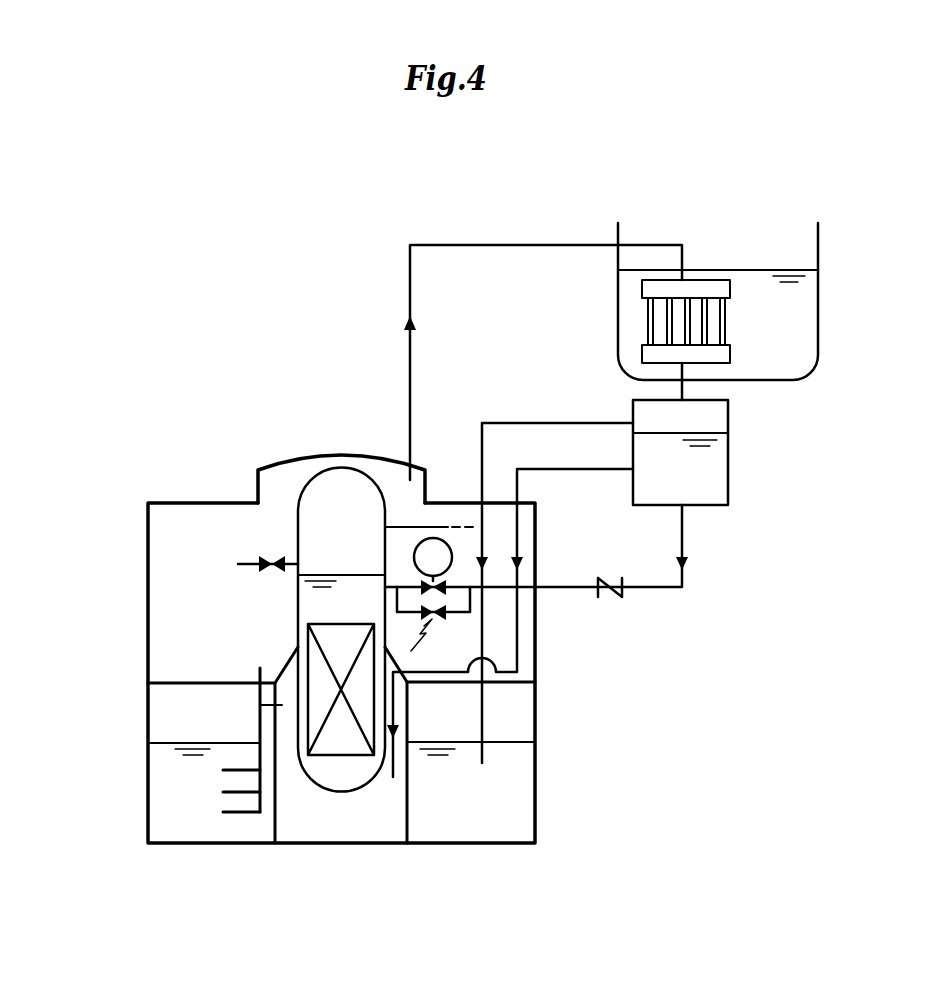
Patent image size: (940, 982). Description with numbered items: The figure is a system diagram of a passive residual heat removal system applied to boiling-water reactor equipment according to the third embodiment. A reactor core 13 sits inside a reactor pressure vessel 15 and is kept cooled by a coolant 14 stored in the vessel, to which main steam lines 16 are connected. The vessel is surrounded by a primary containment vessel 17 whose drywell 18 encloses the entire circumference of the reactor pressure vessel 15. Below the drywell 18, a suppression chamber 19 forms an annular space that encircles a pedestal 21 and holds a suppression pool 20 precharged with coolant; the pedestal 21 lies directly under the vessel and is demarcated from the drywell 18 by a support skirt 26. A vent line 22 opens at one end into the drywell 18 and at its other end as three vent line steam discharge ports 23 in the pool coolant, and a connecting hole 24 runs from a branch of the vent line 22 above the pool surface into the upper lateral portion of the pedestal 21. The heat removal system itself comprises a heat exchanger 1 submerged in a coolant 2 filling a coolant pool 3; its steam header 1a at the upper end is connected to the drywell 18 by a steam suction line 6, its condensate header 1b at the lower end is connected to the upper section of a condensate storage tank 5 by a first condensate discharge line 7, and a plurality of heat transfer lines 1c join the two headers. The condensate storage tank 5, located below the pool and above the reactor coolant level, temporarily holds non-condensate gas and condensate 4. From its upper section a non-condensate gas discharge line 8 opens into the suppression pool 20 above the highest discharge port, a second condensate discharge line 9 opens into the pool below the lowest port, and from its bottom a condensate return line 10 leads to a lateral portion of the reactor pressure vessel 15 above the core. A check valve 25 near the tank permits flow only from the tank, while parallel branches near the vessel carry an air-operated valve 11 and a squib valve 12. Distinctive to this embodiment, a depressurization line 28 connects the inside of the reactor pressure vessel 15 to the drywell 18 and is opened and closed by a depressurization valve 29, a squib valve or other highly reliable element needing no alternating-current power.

The heat exchanger 1 is at (715, 245).
The steam header 1a is at (712, 293).
The condensate header 1b is at (702, 353).
The heat transfer lines 1c is at (705, 325).
The coolant 2 is at (797, 315).
The coolant pool 3 is at (823, 243).
The condensate 4 is at (682, 480).
The condensate storage tank 5 is at (730, 455).
The steam suction line 6 is at (530, 245).
The first condensate discharge line 7 is at (680, 388).
The non-condensate gas discharge line 8 is at (493, 422).
The second condensate discharge line 9 is at (563, 470).
The condensate return line 10 is at (684, 540).
The air-operated valve 11 is at (437, 538).
The squib valve 12 is at (441, 620).
The reactor core 13 is at (342, 648).
The coolant 14 is at (335, 574).
The reactor pressure vessel 15 is at (306, 492).
The main steam lines 16 is at (402, 526).
The primary containment vessel 17 is at (148, 600).
The drywell 18 is at (198, 540).
The suppression chamber 19 is at (218, 705).
The suppression pool 20 is at (162, 777).
The pedestal 21 is at (388, 813).
The vent line 22 is at (258, 724).
The vent line steam discharge ports 23 is at (222, 812).
The connecting hole 24 is at (282, 708).
The check valve 25 is at (610, 597).
The support skirt 26 is at (278, 670).
The depressurization line 28 is at (247, 567).
The depressurization valve 29 is at (276, 569).